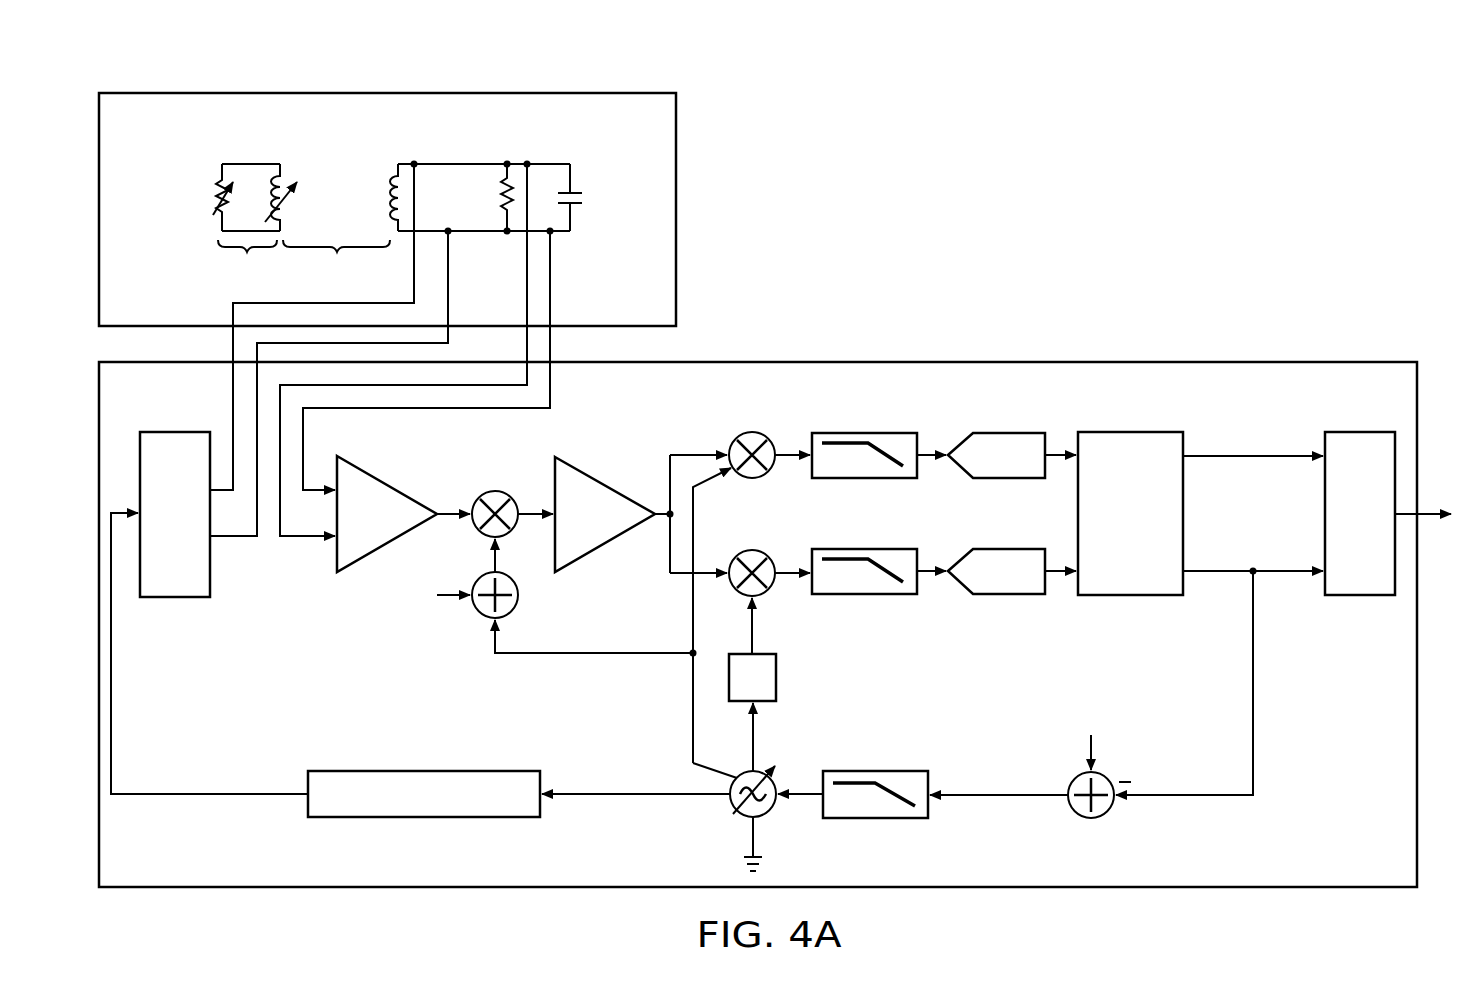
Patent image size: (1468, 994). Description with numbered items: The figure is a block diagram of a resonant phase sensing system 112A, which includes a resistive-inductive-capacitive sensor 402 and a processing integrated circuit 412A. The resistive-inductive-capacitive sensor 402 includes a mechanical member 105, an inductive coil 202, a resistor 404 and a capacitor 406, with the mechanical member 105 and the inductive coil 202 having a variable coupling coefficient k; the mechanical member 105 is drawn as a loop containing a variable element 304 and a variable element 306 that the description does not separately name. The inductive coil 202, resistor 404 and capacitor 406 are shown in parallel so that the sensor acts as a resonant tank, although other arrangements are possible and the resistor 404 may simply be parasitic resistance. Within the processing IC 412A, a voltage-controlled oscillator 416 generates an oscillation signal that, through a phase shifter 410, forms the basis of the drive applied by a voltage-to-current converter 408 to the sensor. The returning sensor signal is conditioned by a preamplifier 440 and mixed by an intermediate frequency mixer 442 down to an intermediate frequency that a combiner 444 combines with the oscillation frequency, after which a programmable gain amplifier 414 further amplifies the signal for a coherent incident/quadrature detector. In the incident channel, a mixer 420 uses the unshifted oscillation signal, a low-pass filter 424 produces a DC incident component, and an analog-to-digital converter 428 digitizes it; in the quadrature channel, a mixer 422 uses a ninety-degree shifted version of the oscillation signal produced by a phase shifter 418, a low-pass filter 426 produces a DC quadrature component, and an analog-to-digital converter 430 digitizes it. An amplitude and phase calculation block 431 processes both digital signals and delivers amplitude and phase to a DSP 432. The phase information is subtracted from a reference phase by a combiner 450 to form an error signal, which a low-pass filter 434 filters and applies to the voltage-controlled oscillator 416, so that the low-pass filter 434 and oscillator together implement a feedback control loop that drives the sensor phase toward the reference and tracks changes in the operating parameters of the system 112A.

The resonant phase sensing system 112A is at (1078, 146).
The resistive-inductive-capacitive sensor 402 is at (328, 88).
The mechanical member 105 is at (254, 225).
The variable resistor 304 is at (214, 198).
The variable inductor 306 is at (292, 212).
The inductive coil 202 is at (385, 188).
The resistor 404 is at (501, 198).
The capacitor 406 is at (585, 197).
The processing integrated circuit 412A is at (946, 358).
The voltage-to-current converter 408 is at (175, 432).
The preamplifier 440 is at (386, 484).
The intermediate frequency mixer 442 is at (507, 492).
The combiner 444 is at (480, 610).
The programmable gain amplifier 414 is at (612, 489).
The mixer 420 is at (767, 474).
The mixer 422 is at (767, 592).
The low-pass filter 424 is at (866, 478).
The low-pass filter 426 is at (866, 594).
The analog-to-digital converter 428 is at (993, 478).
The analog-to-digital converter 430 is at (993, 594).
The amplitude and phase calculation block 431 is at (1133, 595).
The DSP 432 is at (1337, 548).
The phase shifter 418 is at (776, 678).
The voltage-controlled oscillator 416 is at (769, 813).
The low-pass filter 434 is at (875, 818).
The combiner 450 is at (1108, 812).
The phase shifter 410 is at (423, 818).